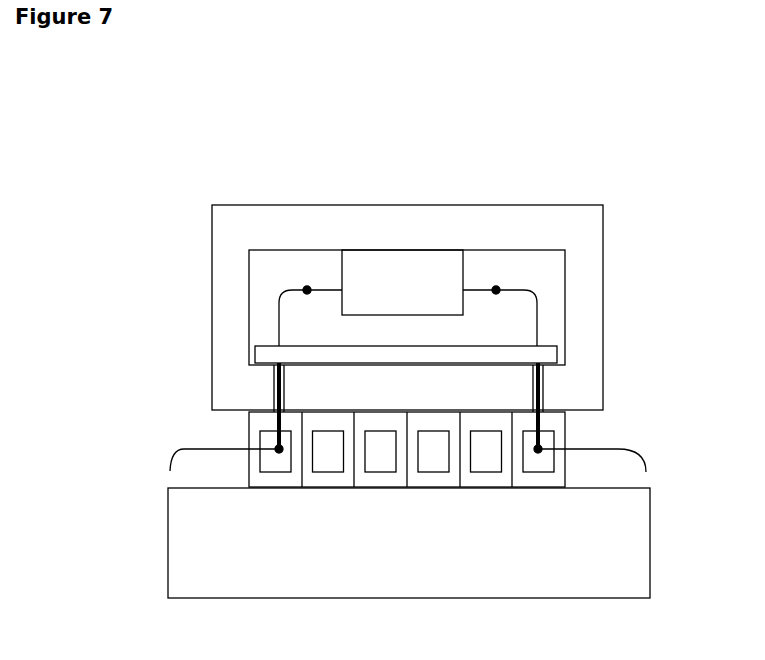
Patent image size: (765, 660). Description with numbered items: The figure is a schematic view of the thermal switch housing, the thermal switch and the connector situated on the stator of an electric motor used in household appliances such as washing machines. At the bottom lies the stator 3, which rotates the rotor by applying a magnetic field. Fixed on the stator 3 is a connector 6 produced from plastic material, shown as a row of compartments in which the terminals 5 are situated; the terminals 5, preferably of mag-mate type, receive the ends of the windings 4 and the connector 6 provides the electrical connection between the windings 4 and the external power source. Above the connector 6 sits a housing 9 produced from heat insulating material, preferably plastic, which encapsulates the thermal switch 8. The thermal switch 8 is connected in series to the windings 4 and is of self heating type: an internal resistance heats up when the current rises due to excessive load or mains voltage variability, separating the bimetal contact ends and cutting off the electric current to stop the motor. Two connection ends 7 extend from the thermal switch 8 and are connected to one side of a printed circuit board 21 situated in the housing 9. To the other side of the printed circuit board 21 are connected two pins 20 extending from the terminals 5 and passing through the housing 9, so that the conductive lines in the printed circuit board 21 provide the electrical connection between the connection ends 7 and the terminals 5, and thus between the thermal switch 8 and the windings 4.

The stator 3 is at (637, 525).
The winding 4 is at (200, 449).
The terminal 5 is at (278, 466).
The connector 6 is at (563, 472).
The connection end 7 is at (322, 289).
The thermal switch 8 is at (406, 282).
The housing 9 is at (223, 252).
The pin 20 is at (285, 388).
The printed circuit board 21 is at (557, 352).